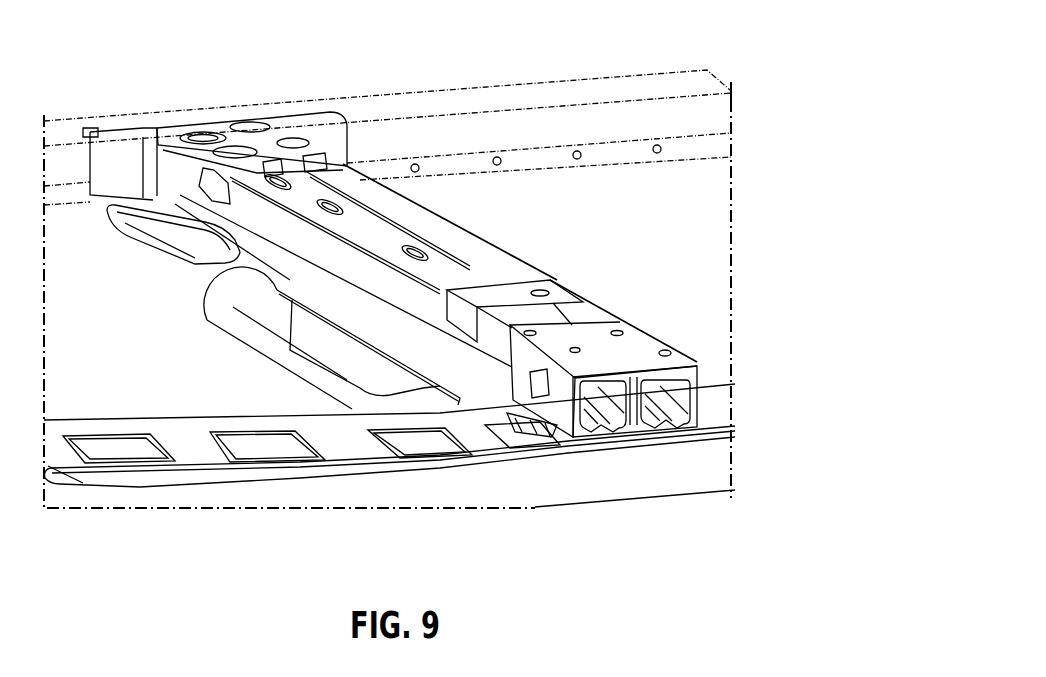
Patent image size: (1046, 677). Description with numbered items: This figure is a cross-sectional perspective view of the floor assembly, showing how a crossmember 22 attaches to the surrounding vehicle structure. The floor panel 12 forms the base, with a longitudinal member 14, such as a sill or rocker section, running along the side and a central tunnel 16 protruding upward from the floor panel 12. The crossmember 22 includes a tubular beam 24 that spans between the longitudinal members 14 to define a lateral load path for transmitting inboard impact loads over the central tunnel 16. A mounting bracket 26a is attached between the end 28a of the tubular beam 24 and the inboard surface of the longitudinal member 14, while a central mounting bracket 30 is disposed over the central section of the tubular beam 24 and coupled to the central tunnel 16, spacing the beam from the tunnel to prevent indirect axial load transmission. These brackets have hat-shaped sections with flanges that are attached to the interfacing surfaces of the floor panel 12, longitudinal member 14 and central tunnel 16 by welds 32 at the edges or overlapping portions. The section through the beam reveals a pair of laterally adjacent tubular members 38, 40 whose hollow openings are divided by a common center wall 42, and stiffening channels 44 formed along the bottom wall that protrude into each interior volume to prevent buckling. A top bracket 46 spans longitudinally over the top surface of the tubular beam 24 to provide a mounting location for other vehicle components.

The floor panel 12 is at (84, 336).
The longitudinal member 14 is at (582, 97).
The central tunnel 16 is at (188, 440).
The crossmember 22 is at (622, 316).
The tubular beam 24 is at (621, 403).
The mounting bracket 26a is at (195, 133).
The end of tubular beam 28a is at (370, 176).
The central mounting bracket 30 is at (651, 453).
The weld 32 is at (320, 170).
The tubular member 38 is at (297, 237).
The tubular member 40 is at (478, 250).
The center wall 42 is at (628, 405).
The stiffening channel 44 is at (605, 425).
The top bracket 46 is at (583, 300).